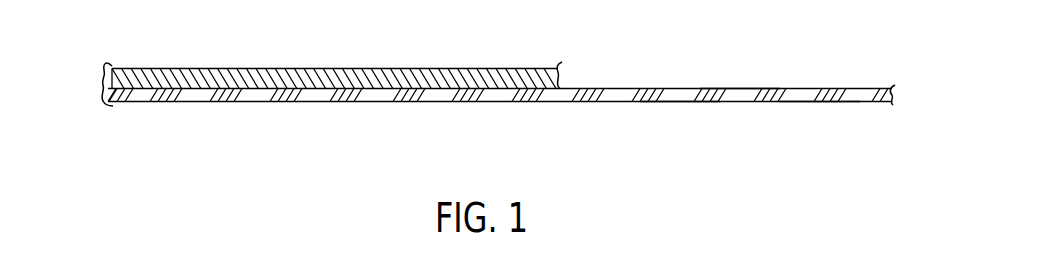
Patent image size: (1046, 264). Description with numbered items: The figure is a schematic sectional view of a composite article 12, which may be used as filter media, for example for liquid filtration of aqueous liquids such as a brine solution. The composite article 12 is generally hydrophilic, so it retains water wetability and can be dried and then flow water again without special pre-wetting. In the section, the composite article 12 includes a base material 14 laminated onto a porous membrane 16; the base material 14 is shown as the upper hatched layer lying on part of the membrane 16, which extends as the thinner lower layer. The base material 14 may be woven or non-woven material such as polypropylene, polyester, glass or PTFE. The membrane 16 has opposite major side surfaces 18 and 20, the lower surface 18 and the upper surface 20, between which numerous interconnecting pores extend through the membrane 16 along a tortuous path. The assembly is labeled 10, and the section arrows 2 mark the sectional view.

The laminate assembly 10 is at (98, 85).
The composite article 12 is at (255, 107).
The base material 14 is at (322, 63).
The section line 2- 2 is at (591, 78).
The porous membrane 16 is at (803, 97).
The major side surface 18 is at (673, 102).
The major side surface 20 is at (740, 88).